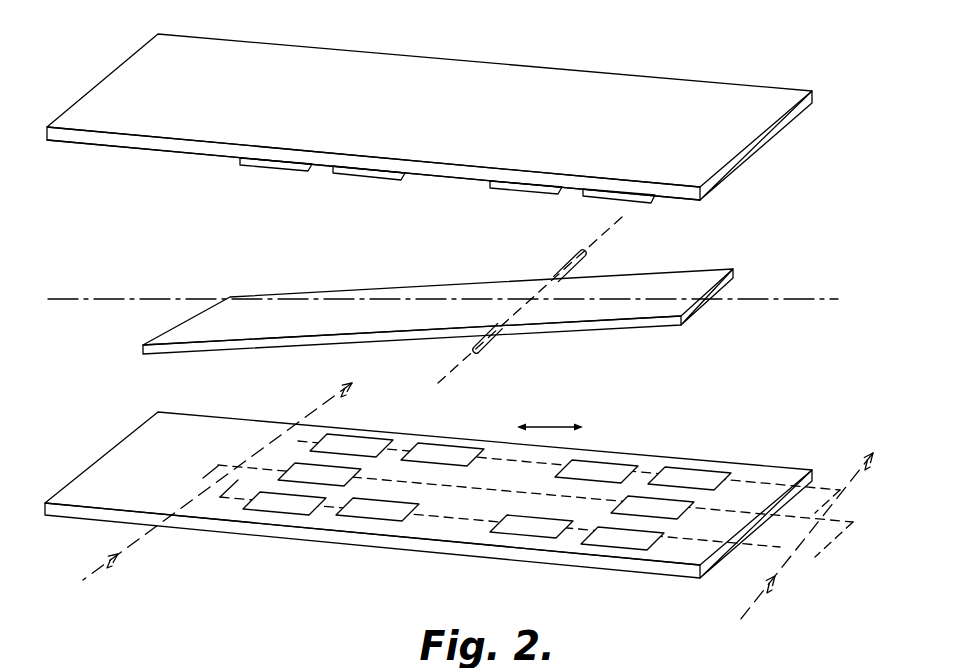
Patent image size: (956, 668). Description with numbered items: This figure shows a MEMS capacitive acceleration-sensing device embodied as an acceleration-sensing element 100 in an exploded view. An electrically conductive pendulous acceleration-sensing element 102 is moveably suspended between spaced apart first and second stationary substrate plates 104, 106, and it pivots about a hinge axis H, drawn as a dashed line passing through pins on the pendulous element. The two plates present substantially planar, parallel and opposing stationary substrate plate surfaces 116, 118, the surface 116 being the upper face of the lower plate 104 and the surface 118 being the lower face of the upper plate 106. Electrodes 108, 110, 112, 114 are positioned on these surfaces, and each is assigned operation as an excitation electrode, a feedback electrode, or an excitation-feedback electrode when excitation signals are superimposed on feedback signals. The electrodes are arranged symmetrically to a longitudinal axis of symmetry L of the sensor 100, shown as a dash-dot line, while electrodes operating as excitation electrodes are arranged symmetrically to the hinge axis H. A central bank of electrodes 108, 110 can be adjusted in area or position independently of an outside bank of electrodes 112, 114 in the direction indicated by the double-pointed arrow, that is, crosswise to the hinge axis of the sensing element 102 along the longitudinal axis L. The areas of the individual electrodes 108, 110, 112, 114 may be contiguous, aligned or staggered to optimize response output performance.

The acceleration-sensing element 100 is at (449, 310).
The pendulous acceleration-sensing element 102 is at (693, 281).
The first stationary substrate plate 104 is at (82, 533).
The second stationary substrate plate 106 is at (126, 55).
The electrode 108 is at (522, 490).
The electrode 110 is at (290, 470).
The electrode 112 is at (266, 171).
The electrode 114 is at (364, 181).
The stationary substrate plate surface 116 is at (784, 462).
The stationary substrate plate surface 118 is at (104, 160).
The longitudinal axis of symmetry L is at (770, 301).
The hinge axis H is at (470, 378).